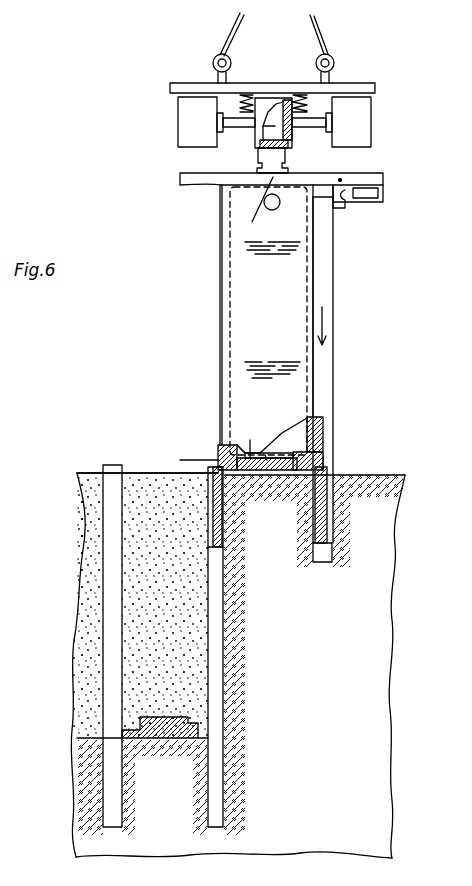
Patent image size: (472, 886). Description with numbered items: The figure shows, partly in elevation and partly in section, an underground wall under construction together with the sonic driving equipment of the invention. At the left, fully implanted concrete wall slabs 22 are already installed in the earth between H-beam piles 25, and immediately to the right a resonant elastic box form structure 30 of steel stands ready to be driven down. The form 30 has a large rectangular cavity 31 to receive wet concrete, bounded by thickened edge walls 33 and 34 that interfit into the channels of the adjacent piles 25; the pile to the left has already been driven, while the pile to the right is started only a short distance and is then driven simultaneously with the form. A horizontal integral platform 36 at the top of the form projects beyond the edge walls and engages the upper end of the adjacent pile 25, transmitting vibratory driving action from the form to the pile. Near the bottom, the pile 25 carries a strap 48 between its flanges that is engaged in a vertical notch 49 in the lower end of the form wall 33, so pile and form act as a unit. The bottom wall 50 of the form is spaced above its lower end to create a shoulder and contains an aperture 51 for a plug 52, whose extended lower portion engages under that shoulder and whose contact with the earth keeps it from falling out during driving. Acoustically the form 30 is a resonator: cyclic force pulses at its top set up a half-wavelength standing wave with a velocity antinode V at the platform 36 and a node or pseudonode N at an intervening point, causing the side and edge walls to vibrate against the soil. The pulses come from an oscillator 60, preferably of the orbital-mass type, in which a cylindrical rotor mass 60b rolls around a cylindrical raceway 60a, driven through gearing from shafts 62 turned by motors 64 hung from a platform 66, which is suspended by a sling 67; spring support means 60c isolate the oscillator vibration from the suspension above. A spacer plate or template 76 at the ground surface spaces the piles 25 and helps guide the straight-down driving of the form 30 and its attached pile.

The concrete wall slab 22 is at (145, 485).
The H-beam pile 25 is at (333, 251).
The resonant elastic box form structure 30 is at (237, 315).
The rectangular cavity 31 is at (297, 438).
The thickened edge wall 33 is at (313, 420).
The thickened edge wall 34 is at (218, 453).
The horizontal integral platform 36 is at (190, 183).
The strap 48 is at (323, 467).
The vertical notch 49 is at (323, 453).
The bottom wall 50 is at (238, 445).
The aperture 51 is at (250, 453).
The plug 52 is at (267, 460).
The oscillator 60 is at (250, 148).
The cylindrical internal bearing or raceway 60a is at (272, 103).
The cylindrical rotor mass 60b is at (292, 140).
The spring support means 60c is at (308, 100).
The shaft 62 is at (235, 108).
The motor 64 is at (178, 135).
The platform 66 is at (363, 90).
The sling 67 is at (242, 22).
The spacer plate or template 76 is at (128, 472).
The node or pseudonode N is at (250, 282).
The velocity antinode V is at (213, 347).